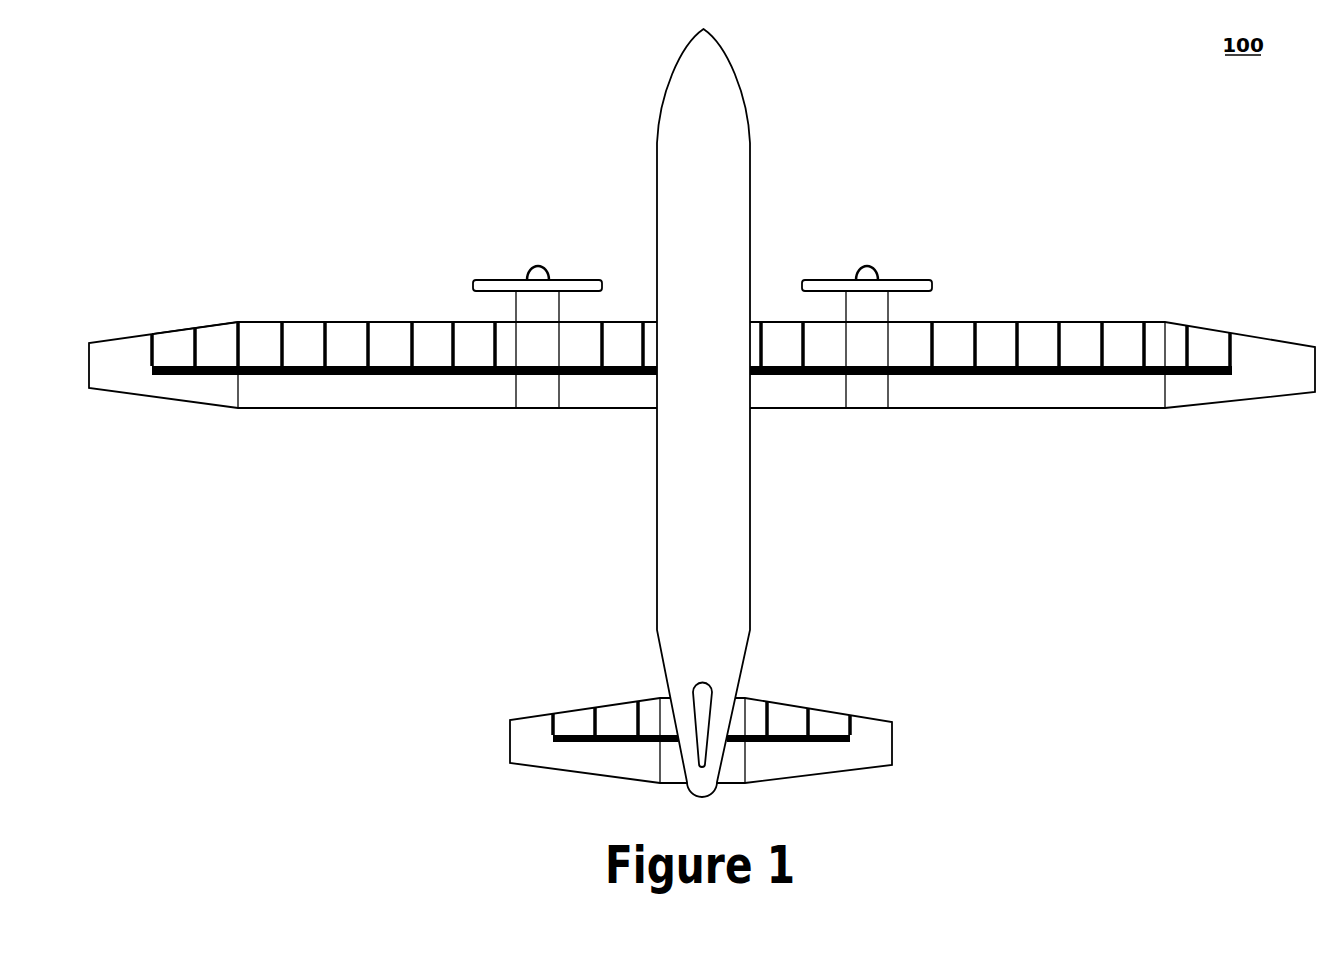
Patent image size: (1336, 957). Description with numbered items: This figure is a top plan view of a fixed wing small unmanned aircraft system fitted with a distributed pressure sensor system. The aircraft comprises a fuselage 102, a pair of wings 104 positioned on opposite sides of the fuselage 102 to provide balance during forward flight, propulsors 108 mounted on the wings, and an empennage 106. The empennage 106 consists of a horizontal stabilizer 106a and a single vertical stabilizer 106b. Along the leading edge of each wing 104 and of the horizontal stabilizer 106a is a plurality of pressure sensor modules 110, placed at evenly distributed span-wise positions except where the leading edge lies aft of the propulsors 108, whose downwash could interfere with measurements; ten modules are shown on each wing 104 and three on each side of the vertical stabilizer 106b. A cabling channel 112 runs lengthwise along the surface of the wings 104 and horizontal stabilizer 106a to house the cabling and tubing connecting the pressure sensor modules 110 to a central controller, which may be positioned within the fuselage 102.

The fuselage 102 is at (754, 472).
The wing 104 is at (316, 414).
The empennage 106 is at (715, 724).
The horizontal stabilizer 106a is at (508, 742).
The vertical stabilizer 106b is at (702, 678).
The propulsor 108 is at (886, 270).
The pressure sensor module 110 is at (1104, 321).
The cabling channel 112 is at (1014, 377).